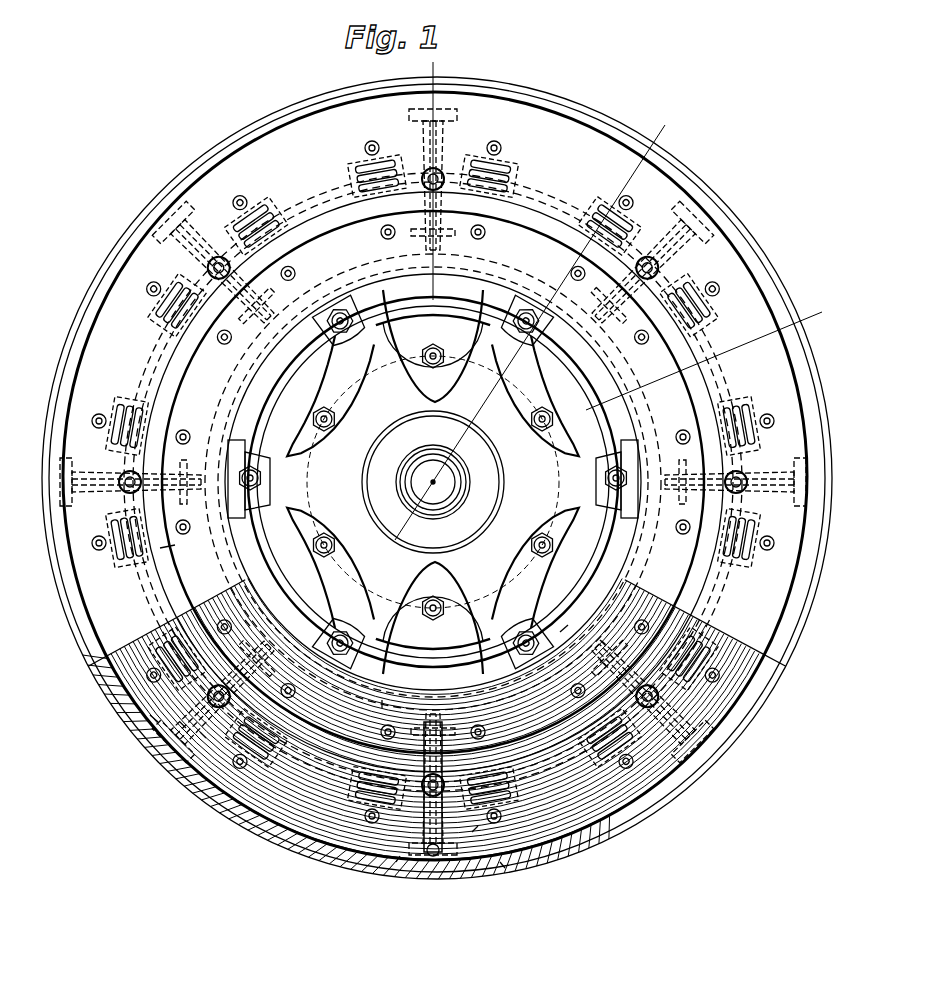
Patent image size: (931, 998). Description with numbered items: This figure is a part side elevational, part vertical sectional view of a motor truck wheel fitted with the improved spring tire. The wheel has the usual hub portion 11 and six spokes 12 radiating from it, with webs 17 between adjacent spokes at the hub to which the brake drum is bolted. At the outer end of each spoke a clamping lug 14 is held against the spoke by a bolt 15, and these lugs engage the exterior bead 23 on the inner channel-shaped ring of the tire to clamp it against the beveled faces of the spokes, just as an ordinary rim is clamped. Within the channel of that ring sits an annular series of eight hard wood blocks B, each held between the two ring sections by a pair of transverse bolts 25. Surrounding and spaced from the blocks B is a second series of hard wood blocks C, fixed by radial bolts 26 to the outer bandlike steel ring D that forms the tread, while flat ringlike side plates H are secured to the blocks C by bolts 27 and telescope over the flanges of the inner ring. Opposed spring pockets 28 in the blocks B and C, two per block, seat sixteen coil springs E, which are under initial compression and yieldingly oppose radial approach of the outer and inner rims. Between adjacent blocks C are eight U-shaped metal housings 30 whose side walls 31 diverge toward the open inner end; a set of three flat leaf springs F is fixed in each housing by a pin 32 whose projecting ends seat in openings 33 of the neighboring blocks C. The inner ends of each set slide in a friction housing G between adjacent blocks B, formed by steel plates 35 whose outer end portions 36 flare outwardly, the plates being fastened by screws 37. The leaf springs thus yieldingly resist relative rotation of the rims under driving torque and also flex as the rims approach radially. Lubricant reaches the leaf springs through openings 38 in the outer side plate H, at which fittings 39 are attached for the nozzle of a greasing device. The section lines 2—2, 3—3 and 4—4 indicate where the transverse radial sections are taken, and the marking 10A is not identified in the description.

The section line 2— 2 is at (544, 333).
The section line 3— 3 is at (420, 57).
The section line 4— 4 is at (702, 350).
The lever 10A is at (382, 700).
The hub portion 11 is at (565, 458).
The spokes 12 is at (428, 348).
The clamping lug 14 is at (232, 494).
The bolt 15 is at (236, 466).
The webs 17 is at (322, 392).
The exterior bead 23 is at (284, 388).
The transverse bolts 25 is at (225, 346).
The radial bolts 26 is at (290, 832).
The bolts 27 is at (94, 552).
The spring pockets 28 is at (472, 832).
The metal housings 30 is at (432, 882).
The side walls 31 is at (424, 852).
The pin 32 is at (200, 732).
The openings 33 is at (180, 722).
The steel plates 35 is at (600, 660).
The outer end portions 36 is at (600, 640).
The screws 37 is at (245, 620).
The openings 38 is at (440, 170).
The fittings 39 is at (431, 170).
The inner blocks B is at (270, 640).
The outer blocks C is at (120, 662).
The outer bandlike ring D is at (505, 868).
The coil springs E is at (150, 715).
The leaf springs F is at (396, 862).
The friction housings G is at (568, 625).
The side plates H is at (175, 545).